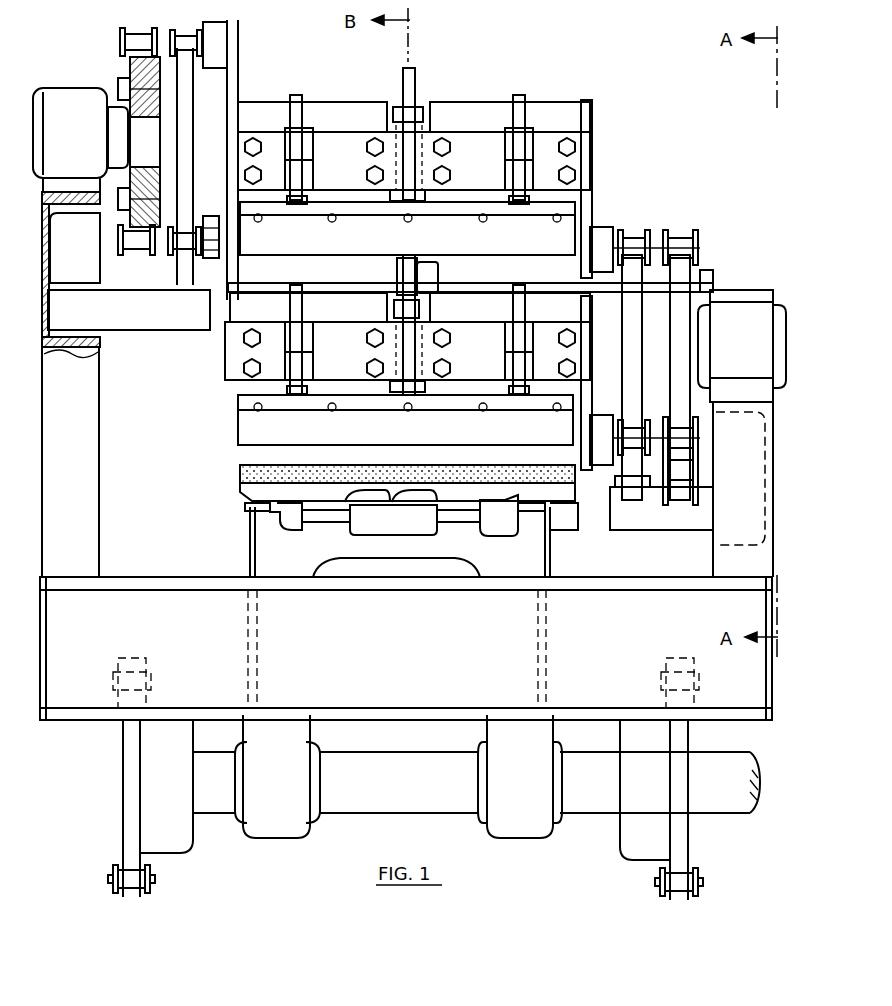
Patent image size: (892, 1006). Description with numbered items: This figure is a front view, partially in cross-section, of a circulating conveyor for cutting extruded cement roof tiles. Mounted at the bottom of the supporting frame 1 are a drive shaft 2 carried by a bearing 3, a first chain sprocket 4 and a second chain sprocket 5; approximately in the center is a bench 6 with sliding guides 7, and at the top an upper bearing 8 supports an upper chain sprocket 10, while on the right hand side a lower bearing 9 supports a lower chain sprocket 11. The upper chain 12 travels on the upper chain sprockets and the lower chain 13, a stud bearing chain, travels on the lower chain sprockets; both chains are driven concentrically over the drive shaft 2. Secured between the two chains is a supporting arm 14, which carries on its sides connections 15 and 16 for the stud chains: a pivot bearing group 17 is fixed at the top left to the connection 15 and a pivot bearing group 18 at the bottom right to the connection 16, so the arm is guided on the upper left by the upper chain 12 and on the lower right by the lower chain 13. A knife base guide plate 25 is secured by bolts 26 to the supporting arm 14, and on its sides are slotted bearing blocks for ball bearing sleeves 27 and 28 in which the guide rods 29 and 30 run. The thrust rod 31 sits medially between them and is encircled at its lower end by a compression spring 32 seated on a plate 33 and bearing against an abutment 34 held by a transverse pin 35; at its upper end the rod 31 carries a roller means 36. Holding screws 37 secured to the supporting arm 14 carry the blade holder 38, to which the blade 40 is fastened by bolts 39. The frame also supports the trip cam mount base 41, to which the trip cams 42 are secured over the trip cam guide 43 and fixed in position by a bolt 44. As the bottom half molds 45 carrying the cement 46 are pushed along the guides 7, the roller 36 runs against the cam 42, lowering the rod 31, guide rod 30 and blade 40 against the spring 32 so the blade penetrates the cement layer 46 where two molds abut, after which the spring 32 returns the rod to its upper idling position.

The supporting arm 1 is at (78, 460).
The drive shaft 2 is at (370, 772).
The bearing 3 is at (258, 748).
The first chain sprocket 4 is at (175, 740).
The second chain sprocket 5 is at (643, 745).
The bench 6 is at (292, 556).
The sliding guides 7 is at (470, 505).
The upper bearing 8 is at (92, 108).
The lower bearing 9 is at (752, 305).
The upper chain sprocket 10 is at (132, 216).
The lower chain sprocket 11 is at (700, 425).
The upper chain 12 is at (178, 250).
The lower chain 13 is at (630, 478).
The supporting arm 14 is at (543, 292).
The connection 15 is at (228, 370).
The connection 16 is at (590, 372).
The stud or pivot bearing group 17 is at (214, 230).
The pivot bearing group 18 is at (640, 430).
The knife base guide plate 25 is at (238, 345).
The bolts 26 is at (450, 368).
The slotted bearing block for ball bearing sleeve 27 is at (306, 340).
The slotted bearing block for ball bearing sleeve 28 is at (524, 344).
The guide rod 29 is at (290, 308).
The guide rod 30 is at (518, 308).
The connecting or thrust rod 31 is at (398, 282).
The compression spring 32 is at (445, 338).
The plate 33 is at (395, 385).
The abutment 34 is at (396, 316).
The transverse key or pin 35 is at (420, 320).
The roller means 36 is at (417, 262).
The holding screws 37 is at (295, 395).
The blade holder 38 is at (444, 410).
The bolts 39 is at (336, 410).
The blade 40 is at (250, 430).
The trip cam mount base 41 is at (597, 286).
The trip cam 42 is at (394, 290).
The trip cam guide 43 is at (428, 275).
The bolt 44 is at (405, 275).
The bottom half molds 45 is at (255, 490).
The cement 46 is at (240, 472).